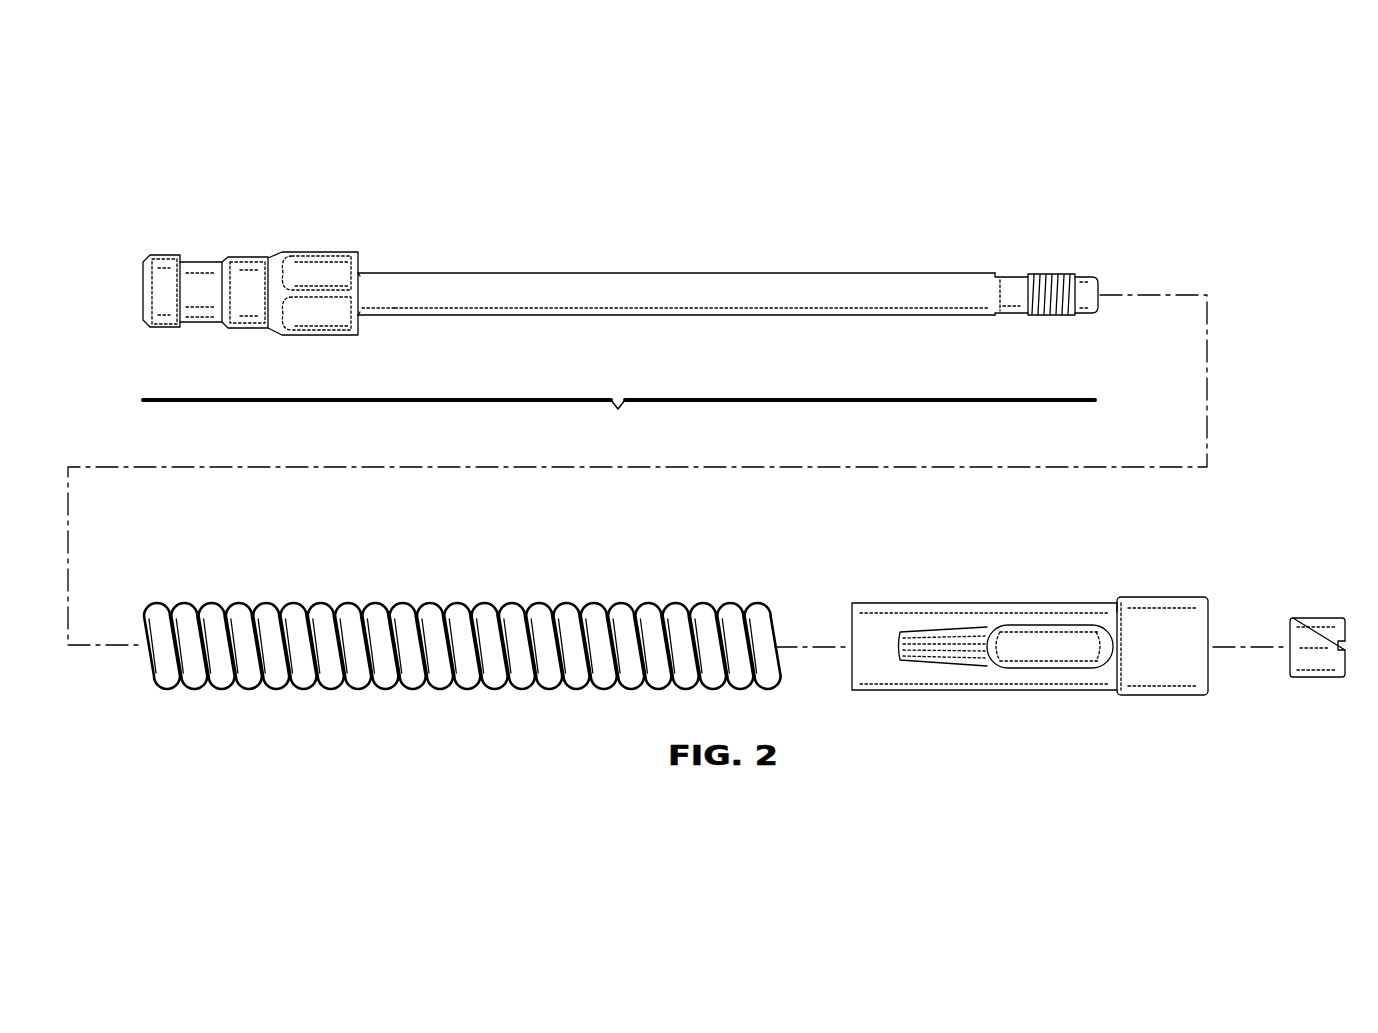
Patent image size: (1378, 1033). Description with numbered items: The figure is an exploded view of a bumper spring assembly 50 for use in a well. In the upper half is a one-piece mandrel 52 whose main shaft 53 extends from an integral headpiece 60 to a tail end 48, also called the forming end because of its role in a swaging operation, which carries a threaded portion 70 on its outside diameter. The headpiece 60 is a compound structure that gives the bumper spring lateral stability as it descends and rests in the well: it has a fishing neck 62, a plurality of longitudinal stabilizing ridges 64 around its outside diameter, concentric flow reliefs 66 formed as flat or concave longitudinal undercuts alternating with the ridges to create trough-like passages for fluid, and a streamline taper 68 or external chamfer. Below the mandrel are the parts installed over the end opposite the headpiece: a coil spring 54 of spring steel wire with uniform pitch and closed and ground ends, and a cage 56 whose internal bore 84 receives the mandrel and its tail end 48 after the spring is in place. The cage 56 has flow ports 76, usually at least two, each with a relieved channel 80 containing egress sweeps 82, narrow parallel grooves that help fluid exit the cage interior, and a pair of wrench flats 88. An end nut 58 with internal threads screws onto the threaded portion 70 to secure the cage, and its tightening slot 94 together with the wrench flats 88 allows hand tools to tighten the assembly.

The bumper spring assembly 50 is at (348, 148).
The fishing neck 62 is at (165, 263).
The headpiece 60 is at (247, 263).
The longitudinal stabilizing ridges 64 is at (322, 292).
The concentric flow reliefs 66 is at (338, 315).
The streamline taper 68 is at (362, 297).
The main shaft 53 is at (577, 283).
The threaded portion 70 is at (1048, 274).
The tail end 48 is at (1100, 284).
The mandrel 52 is at (619, 421).
The coil spring 54 is at (300, 690).
The cage 56 is at (882, 686).
The relieved channel 80 is at (965, 633).
The egress sweeps 82 is at (937, 653).
The flow ports 76 is at (1043, 650).
The wrench flats 88 is at (1168, 690).
The internal bore 84 is at (1211, 613).
The end nut 58 is at (1318, 678).
The tightening slot 94 is at (1347, 648).